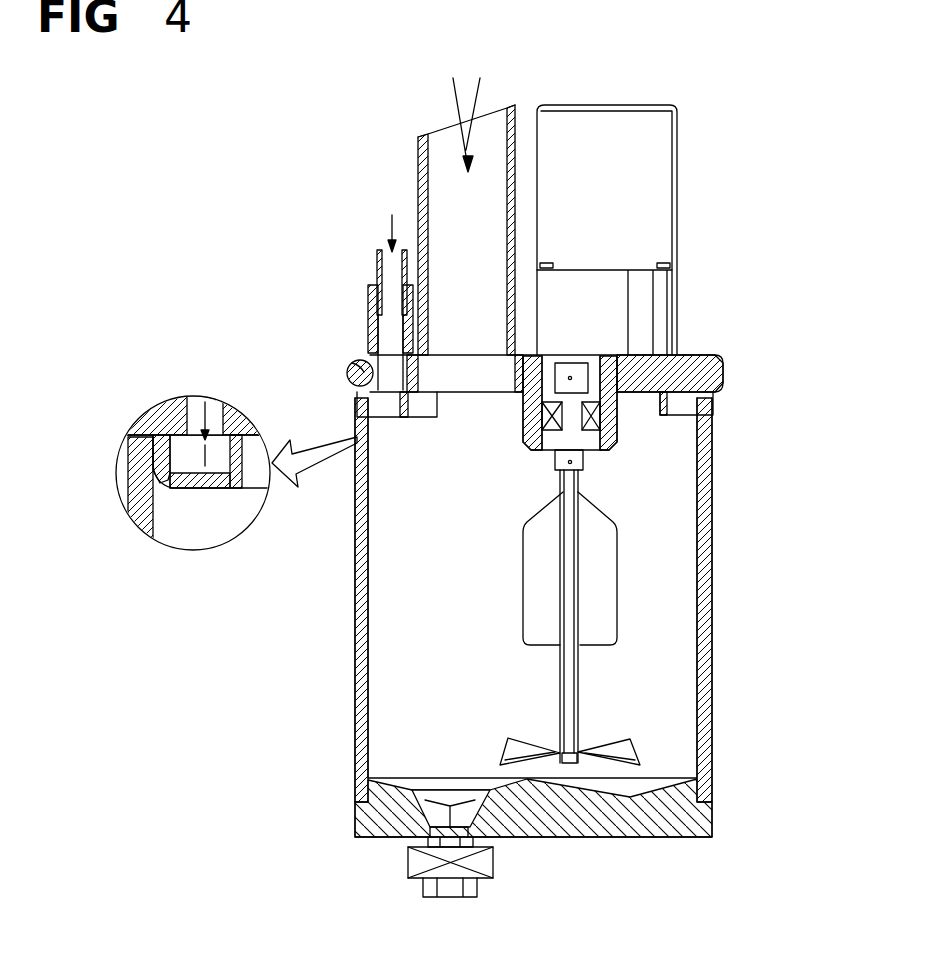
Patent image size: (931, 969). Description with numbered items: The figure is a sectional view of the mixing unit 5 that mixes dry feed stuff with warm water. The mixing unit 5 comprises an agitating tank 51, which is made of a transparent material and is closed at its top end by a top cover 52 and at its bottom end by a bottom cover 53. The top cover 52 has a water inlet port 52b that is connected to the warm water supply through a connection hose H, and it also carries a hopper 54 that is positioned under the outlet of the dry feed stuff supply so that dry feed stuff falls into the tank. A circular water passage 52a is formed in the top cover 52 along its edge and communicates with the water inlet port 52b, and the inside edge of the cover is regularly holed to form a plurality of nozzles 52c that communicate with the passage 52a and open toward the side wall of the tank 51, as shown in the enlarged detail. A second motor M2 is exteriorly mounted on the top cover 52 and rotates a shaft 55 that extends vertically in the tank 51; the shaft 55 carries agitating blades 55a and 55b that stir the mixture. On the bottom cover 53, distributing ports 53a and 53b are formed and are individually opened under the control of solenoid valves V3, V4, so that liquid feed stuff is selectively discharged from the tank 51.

The mixing unit 5 is at (818, 207).
The agitating tank 51 is at (713, 546).
The top cover 52 is at (724, 362).
The circular water passage 52a is at (362, 400).
The water inlet port 52b is at (360, 346).
The nozzles 52c is at (133, 472).
The bottom cover 53 is at (712, 812).
The distributing port 53a is at (430, 808).
The distributing port 53b is at (450, 842).
The hopper 54 is at (418, 165).
The shaft 55 is at (563, 598).
The agitating blade 55a is at (527, 556).
The agitating blade 55b is at (510, 741).
The connection hose H is at (377, 250).
The second motor M2 is at (678, 283).
The solenoid valve V3 is at (494, 866).
The solenoid valve V4 is at (450, 887).